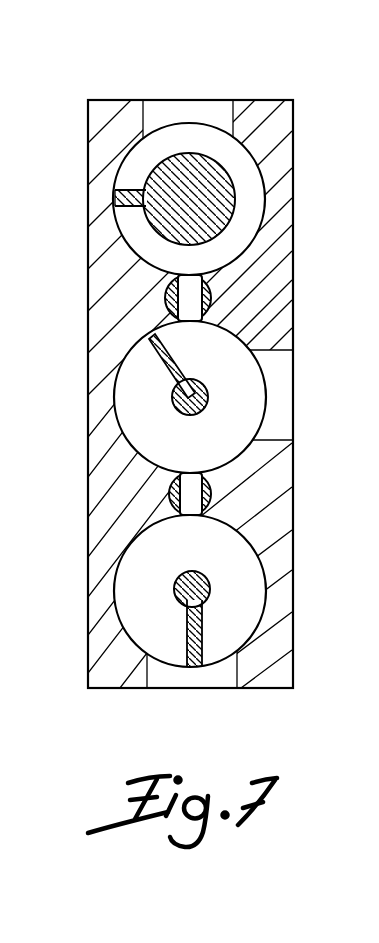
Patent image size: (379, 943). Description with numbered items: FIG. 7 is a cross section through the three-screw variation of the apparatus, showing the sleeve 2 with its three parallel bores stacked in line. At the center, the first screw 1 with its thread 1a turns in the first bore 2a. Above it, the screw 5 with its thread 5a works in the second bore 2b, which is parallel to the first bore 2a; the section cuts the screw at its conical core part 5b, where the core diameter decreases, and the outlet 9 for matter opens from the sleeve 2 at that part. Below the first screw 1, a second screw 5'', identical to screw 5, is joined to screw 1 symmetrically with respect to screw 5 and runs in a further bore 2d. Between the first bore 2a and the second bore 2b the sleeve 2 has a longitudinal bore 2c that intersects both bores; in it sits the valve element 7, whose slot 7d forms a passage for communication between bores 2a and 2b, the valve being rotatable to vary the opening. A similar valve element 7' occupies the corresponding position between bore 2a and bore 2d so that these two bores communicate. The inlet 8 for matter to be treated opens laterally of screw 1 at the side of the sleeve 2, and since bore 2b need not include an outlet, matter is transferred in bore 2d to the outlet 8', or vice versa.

The first screw 1 is at (153, 432).
The thread 1a is at (159, 352).
The sleeve 2 is at (279, 651).
The first bore 2a is at (232, 431).
The second bore 2b is at (243, 168).
The longitudinal bore 2c is at (216, 294).
The bore 2d is at (241, 583).
The screw 5 is at (235, 199).
The thread 5a is at (117, 196).
The conical core part 5b is at (206, 171).
The second screw 5'' is at (272, 605).
The valve element 7 is at (130, 292).
The slot 7d is at (193, 286).
The valve element 7' is at (121, 499).
The inlet 8 is at (297, 392).
The outlet 8' is at (224, 704).
The outlet 9 is at (168, 116).